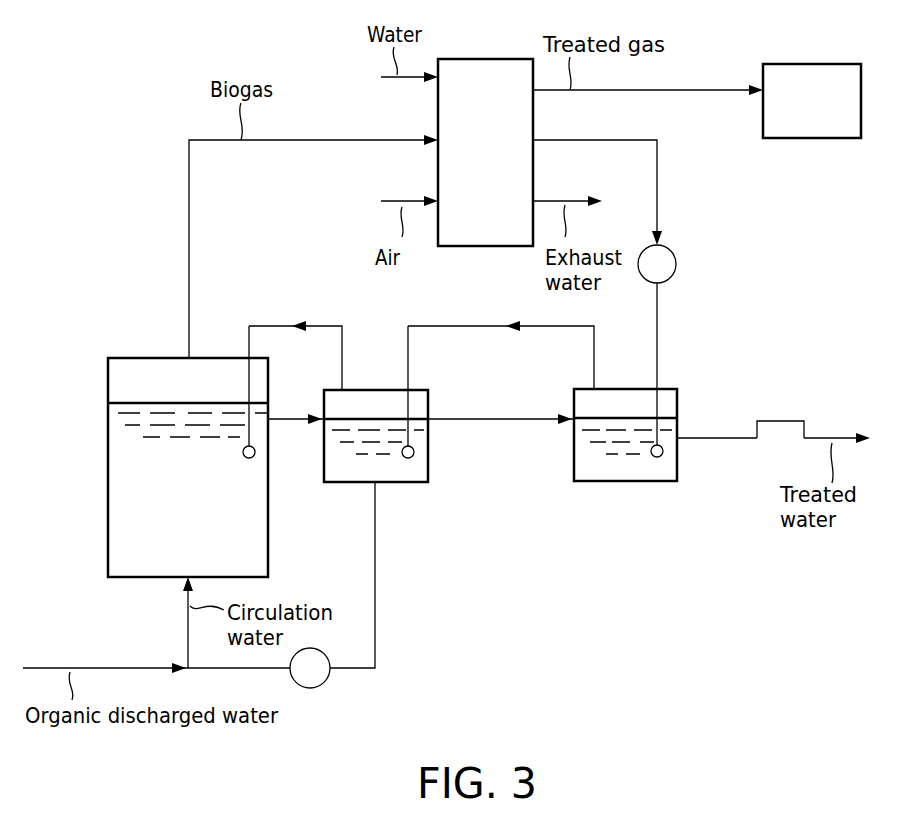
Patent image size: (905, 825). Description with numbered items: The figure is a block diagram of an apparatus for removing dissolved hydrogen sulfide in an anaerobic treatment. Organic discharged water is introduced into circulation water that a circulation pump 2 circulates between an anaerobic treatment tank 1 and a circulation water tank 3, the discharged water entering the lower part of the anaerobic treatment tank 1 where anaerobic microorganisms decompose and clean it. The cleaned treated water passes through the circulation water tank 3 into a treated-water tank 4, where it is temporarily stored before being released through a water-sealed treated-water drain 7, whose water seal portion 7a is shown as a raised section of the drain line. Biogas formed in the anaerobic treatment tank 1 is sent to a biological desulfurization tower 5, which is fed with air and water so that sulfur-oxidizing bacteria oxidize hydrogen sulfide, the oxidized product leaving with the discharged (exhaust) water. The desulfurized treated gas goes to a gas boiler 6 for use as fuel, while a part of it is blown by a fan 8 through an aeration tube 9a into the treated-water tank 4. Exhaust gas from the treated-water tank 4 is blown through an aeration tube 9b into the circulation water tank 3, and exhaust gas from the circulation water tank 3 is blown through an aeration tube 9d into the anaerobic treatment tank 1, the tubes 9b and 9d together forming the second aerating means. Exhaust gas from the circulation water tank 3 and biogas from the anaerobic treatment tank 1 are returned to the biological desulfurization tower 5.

The anaerobic treatment tank 1 is at (108, 450).
The circulation pump 2 is at (318, 686).
The circulation water tank 3 is at (397, 482).
The treated-water tank 4 is at (615, 481).
The biological desulfurization tower 5 is at (483, 59).
The gas boiler 6 is at (808, 64).
The treated-water drain 7 is at (718, 438).
The water seal portion 7a is at (783, 421).
The fan 8 is at (677, 262).
The aeration tube (first aerating means) 9a is at (660, 457).
The aeration tube (second aerating means) 9b is at (411, 458).
The aeration tube (second aerating means) 9d is at (253, 458).